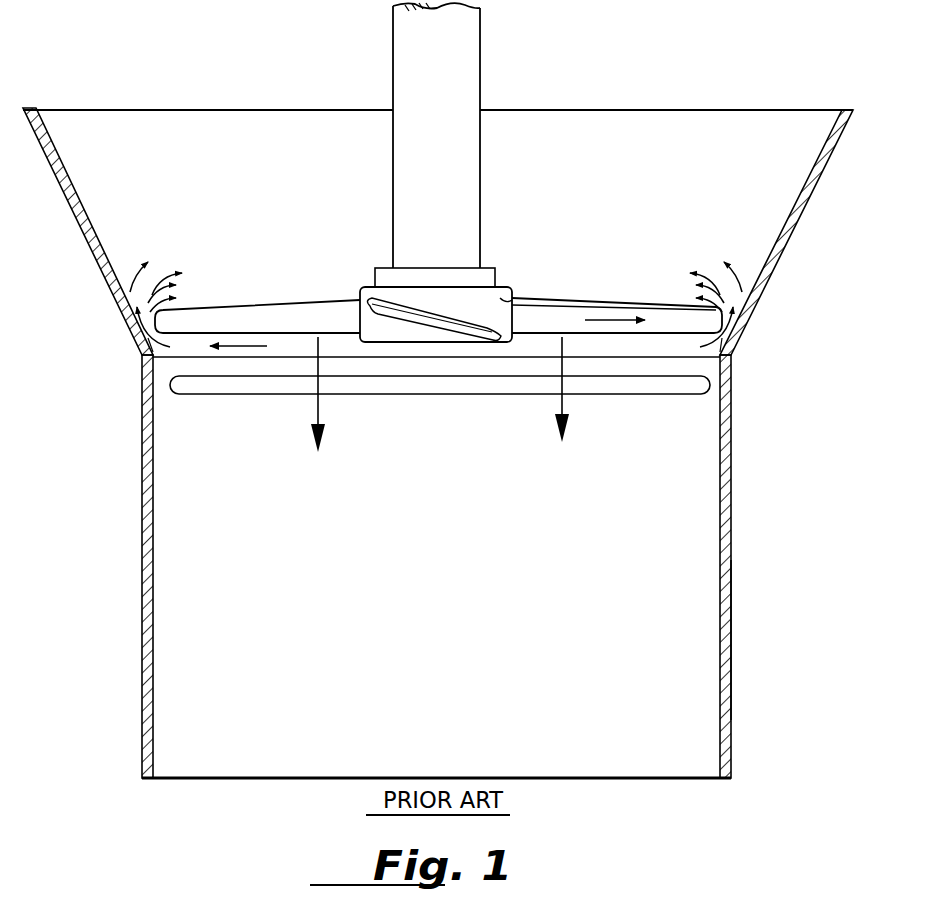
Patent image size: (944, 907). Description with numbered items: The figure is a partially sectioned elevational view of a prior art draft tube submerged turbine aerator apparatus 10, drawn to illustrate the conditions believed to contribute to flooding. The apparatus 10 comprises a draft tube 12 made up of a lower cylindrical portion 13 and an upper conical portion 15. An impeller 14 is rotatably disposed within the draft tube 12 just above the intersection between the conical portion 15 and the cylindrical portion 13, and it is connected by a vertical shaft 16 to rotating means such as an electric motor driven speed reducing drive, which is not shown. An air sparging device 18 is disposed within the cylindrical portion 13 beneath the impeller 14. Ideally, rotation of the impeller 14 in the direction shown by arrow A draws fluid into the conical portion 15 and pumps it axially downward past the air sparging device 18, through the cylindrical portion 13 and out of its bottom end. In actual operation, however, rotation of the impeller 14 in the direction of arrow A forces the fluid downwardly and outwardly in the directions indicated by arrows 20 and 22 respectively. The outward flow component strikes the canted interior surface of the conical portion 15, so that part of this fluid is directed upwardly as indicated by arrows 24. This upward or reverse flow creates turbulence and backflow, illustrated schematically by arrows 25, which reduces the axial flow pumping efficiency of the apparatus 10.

The draft tube submerged turbine aerator apparatus 10 is at (768, 420).
The draft tube 12 is at (733, 475).
The cylindrical portion 13 is at (733, 637).
The impeller 14 is at (506, 285).
The conical portion 15 is at (802, 215).
The vertical shaft 16 is at (460, 89).
The air sparging device 18 is at (184, 396).
The arrows indicating downward fluid flow 20 is at (312, 410).
The arrows indicating outward fluid flow 22 is at (247, 347).
The arrows indicating upward fluid flow 24 is at (136, 336).
The arrows indicating turbulence and backflow 25 is at (135, 266).
The arrow indicating direction of impeller rotation A is at (366, 32).